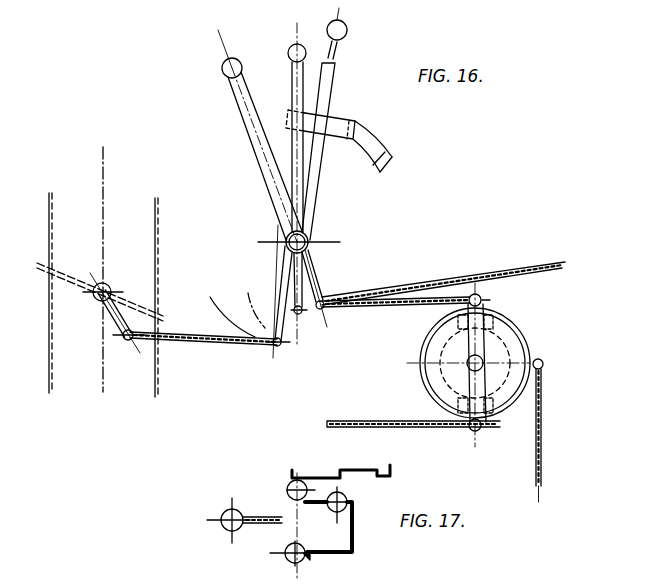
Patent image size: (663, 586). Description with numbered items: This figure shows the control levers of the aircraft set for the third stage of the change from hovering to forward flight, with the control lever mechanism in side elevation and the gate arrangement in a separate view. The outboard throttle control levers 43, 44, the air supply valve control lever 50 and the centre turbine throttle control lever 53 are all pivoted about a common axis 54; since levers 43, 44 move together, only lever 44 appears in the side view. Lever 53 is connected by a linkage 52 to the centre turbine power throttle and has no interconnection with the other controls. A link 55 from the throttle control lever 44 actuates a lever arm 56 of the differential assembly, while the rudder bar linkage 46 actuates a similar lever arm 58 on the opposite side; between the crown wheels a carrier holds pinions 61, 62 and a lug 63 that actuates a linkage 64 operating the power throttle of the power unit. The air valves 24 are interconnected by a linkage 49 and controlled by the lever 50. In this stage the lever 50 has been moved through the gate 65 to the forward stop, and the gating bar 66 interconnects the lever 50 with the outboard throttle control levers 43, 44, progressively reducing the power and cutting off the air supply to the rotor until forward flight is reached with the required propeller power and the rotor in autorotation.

In FIG. 16, the air valve 24 is at (112, 289).
In FIG. 17, the throttle control lever 43 is at (287, 491).
In FIG. 16, the throttle control lever 44 is at (294, 48).
In FIG. 17, the throttle control lever 44 is at (291, 563).
In FIG. 16, the rudder bar linkage 46 is at (375, 422).
In FIG. 16, the linkage 49 is at (228, 338).
In FIG. 16, the air supply valve control lever 50 is at (346, 31).
In FIG. 17, the air supply valve control lever 50 is at (347, 497).
In FIG. 16, the linkage 52 is at (420, 286).
In FIG. 16, the throttle control lever 53 is at (226, 74).
In FIG. 17, the throttle control lever 53 is at (242, 525).
In FIG. 16, the common axis 54 is at (305, 240).
In FIG. 16, the link 55 is at (392, 306).
In FIG. 16, the lever arm 56 is at (478, 340).
In FIG. 16, the lever arm 58 is at (432, 381).
In FIG. 16, the pinion 61 is at (437, 318).
In FIG. 16, the pinion 62 is at (455, 409).
In FIG. 16, the lug 63 is at (543, 361).
In FIG. 16, the linkage 64 is at (543, 455).
In FIG. 16, the gate 65 is at (395, 157).
In FIG. 17, the gate 65 is at (318, 475).
In FIG. 16, the gating bar 66 is at (336, 126).
In FIG. 17, the gating bar 66 is at (353, 533).